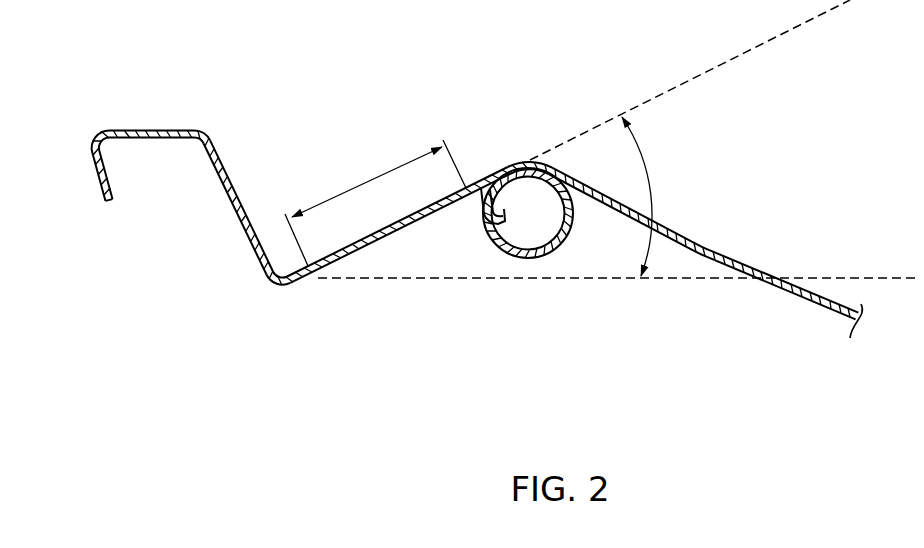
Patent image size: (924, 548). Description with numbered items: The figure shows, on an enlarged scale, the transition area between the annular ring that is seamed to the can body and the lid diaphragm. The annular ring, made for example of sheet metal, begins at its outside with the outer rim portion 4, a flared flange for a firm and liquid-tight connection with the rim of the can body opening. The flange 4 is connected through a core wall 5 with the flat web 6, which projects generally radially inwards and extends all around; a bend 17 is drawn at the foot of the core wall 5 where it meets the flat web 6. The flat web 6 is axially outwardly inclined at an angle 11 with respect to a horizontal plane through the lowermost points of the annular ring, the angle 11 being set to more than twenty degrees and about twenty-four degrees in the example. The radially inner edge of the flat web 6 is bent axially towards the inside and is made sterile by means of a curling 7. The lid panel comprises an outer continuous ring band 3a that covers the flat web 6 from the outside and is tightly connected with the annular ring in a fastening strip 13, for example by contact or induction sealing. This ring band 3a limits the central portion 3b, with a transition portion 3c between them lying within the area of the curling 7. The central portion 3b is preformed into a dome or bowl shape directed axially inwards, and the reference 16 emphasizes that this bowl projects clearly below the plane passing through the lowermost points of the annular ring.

The outer rim portion 4 is at (134, 129).
The core wall 5 is at (244, 228).
The bend 17 is at (273, 301).
The outer continuous ring band 3a is at (410, 185).
The flat web 6 is at (404, 228).
The fastening strip 13 is at (335, 196).
The transition portion 3c is at (529, 162).
The curling 7 is at (531, 259).
The central portion 3b is at (794, 314).
The reference for bowl projection 16 is at (864, 332).
The angle 11 is at (652, 190).